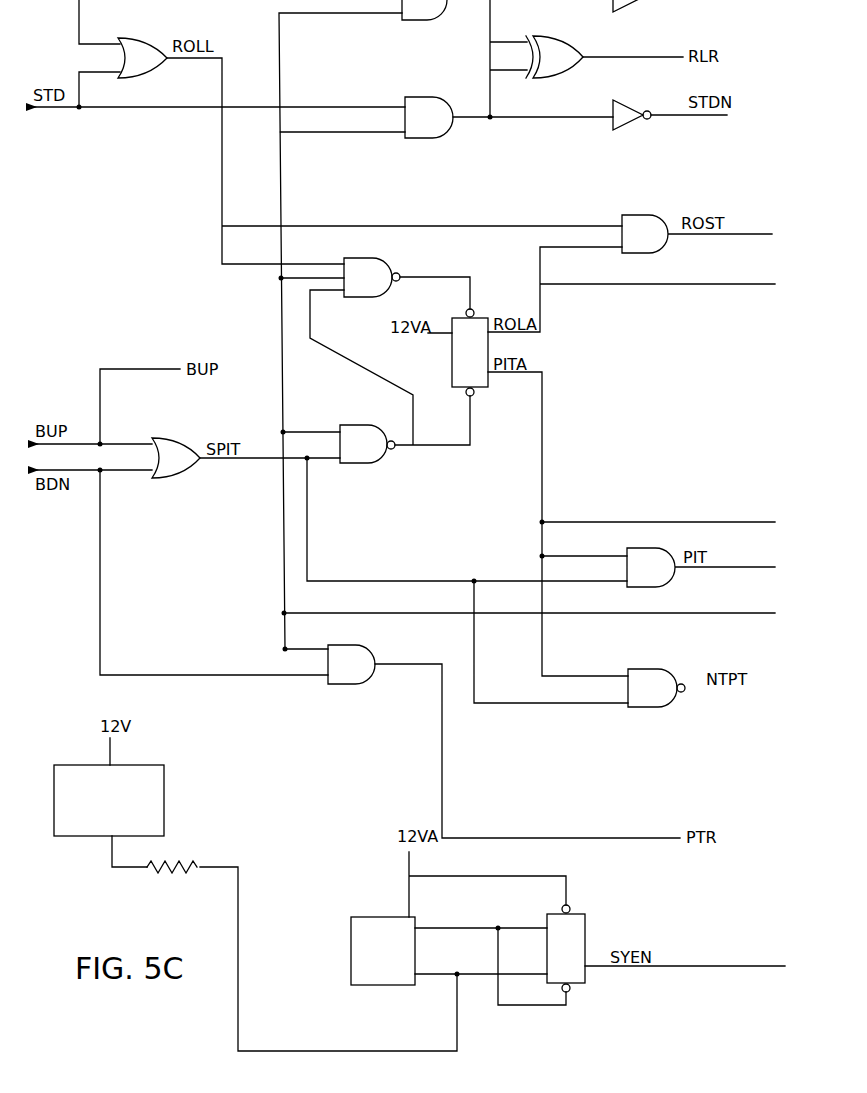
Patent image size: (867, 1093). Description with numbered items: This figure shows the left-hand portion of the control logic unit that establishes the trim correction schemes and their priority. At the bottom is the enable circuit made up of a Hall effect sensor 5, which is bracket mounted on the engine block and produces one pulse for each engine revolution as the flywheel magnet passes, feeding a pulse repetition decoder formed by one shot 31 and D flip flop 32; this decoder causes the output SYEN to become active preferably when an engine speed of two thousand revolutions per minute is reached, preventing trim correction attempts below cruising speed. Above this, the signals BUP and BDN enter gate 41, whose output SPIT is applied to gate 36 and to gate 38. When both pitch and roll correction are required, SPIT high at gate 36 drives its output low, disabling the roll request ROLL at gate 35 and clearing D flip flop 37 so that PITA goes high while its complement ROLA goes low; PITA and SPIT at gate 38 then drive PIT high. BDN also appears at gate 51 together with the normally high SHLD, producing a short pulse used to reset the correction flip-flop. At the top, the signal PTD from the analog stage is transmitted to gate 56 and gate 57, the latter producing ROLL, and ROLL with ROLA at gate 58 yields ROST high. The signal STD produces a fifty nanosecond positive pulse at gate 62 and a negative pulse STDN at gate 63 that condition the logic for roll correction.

The gate 57 is at (142, 58).
The gate 56 is at (424, 10).
The gate 62 is at (554, 57).
The gate 63 is at (632, 107).
The gate 58 is at (697, 234).
The gate 35 is at (372, 277).
The D flip flop 37 is at (470, 352).
The gate 36 is at (367, 444).
The gate 41 is at (176, 458).
The gate 38 is at (701, 567).
The gate 51 is at (351, 664).
The Hall effect sensor 5 is at (109, 800).
The one shot 31 is at (383, 951).
The D flip flop 32 is at (566, 948).